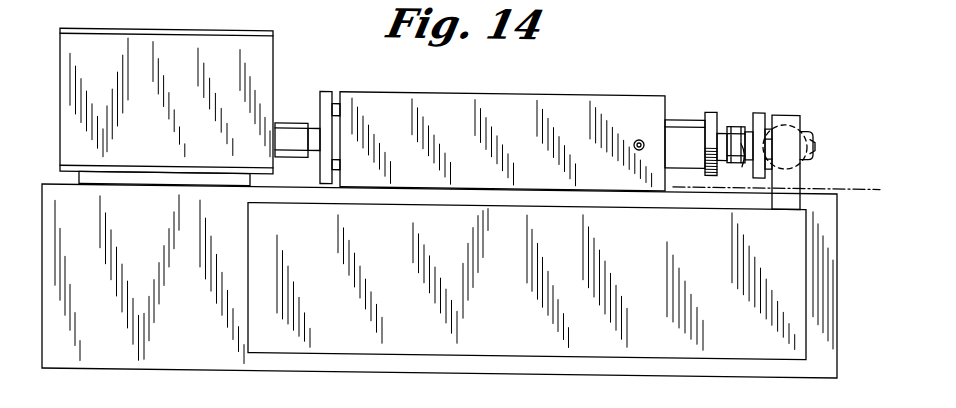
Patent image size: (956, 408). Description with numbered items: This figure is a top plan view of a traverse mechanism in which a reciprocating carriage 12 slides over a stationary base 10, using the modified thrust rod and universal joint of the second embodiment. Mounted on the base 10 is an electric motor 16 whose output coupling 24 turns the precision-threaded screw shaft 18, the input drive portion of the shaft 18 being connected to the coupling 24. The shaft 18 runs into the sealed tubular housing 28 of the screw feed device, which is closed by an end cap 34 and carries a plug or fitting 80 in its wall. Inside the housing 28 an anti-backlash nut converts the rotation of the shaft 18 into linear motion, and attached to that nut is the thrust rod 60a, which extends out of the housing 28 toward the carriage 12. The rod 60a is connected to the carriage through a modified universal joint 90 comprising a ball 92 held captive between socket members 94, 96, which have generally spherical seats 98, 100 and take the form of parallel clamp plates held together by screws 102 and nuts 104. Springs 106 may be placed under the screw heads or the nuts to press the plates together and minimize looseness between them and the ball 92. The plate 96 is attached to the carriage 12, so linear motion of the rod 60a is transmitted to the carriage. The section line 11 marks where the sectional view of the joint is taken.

The stationary base 10 is at (193, 356).
The section line 11— 11 is at (683, 243).
The reciprocating carriage 12 is at (333, 349).
The electric motor 16 is at (224, 45).
The shaft 18 is at (320, 90).
The coupling 24 is at (288, 135).
The tubular housing 28 is at (568, 115).
The end cap 34 is at (332, 89).
The thrust rod 60a is at (676, 125).
The plug or fitting 80 is at (637, 132).
The universal joint 90 is at (802, 132).
The ball 92 is at (775, 118).
The socket member 94 is at (760, 108).
The socket member 96 is at (800, 112).
The seat 98 is at (753, 104).
The seat 100 is at (805, 155).
The screws 102 is at (733, 118).
The nuts 104 is at (808, 125).
The springs 106 is at (748, 148).